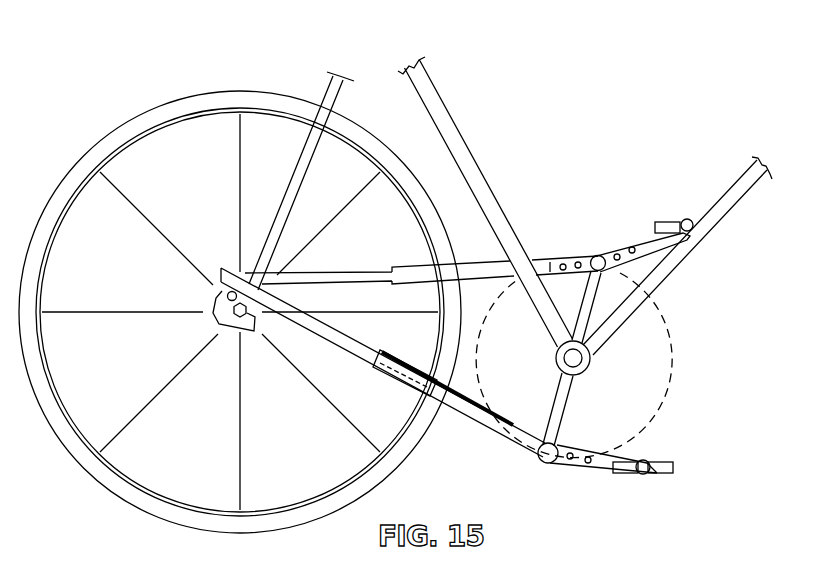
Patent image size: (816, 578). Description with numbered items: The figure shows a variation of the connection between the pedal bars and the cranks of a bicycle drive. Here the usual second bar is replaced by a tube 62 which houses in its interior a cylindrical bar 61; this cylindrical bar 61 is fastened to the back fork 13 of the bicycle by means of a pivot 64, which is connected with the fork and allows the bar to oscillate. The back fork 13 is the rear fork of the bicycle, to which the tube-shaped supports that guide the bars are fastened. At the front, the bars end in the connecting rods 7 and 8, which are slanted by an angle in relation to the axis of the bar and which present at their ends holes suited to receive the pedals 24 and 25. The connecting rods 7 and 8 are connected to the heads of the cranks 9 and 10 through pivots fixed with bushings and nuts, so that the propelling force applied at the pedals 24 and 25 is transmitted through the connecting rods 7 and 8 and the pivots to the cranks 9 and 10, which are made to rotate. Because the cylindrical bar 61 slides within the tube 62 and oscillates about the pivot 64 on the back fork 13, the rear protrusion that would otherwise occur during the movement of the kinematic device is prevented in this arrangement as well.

The connecting rod 7 is at (421, 243).
The connecting rod 8 is at (583, 462).
The crank 9 is at (583, 313).
The crank 10 is at (558, 410).
The back fork 13 is at (300, 168).
The pedal 24 is at (632, 467).
The pedal 25 is at (663, 224).
The cylindrical bar 61 is at (338, 348).
The tube 62 is at (467, 407).
The pivot 64 is at (226, 325).